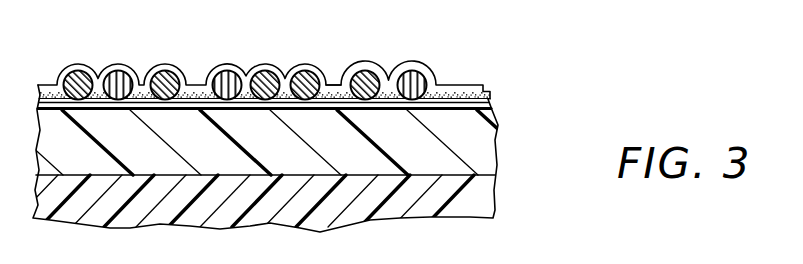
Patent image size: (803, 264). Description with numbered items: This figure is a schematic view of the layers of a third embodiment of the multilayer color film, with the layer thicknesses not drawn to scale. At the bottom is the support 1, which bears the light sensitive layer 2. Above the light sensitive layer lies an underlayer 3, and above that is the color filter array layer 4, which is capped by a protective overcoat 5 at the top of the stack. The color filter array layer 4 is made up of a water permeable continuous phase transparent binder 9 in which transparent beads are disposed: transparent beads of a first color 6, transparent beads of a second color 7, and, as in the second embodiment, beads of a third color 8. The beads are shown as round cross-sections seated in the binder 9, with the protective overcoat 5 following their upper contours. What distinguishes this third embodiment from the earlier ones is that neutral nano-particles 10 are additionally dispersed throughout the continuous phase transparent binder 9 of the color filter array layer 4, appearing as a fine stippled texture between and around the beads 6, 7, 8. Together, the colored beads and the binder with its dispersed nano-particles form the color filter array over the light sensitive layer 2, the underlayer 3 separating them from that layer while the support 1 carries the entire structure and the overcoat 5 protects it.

The support 1 is at (494, 192).
The light sensitive layer 2 is at (490, 141).
The underlayer 3 is at (487, 105).
The color filter array layer 4 is at (487, 96).
The protective overcoat 5 is at (484, 84).
The transparent beads of a first color 6 is at (78, 90).
The transparent beads of a second color 7 is at (164, 86).
The beads of a third color 8 is at (121, 88).
The water permeable continuous phase transparent binder 9 is at (328, 85).
The neutral nano-particles 10 is at (452, 98).